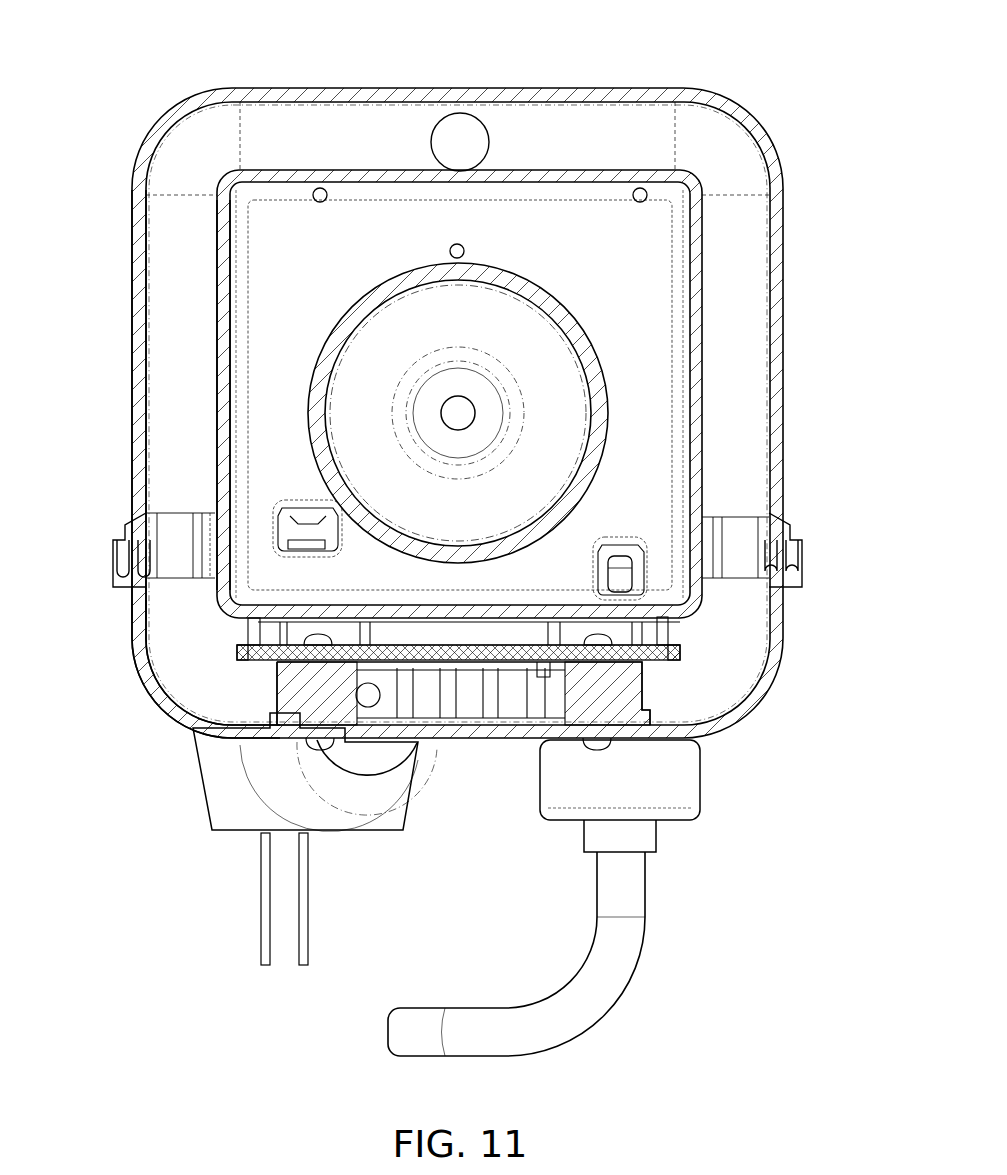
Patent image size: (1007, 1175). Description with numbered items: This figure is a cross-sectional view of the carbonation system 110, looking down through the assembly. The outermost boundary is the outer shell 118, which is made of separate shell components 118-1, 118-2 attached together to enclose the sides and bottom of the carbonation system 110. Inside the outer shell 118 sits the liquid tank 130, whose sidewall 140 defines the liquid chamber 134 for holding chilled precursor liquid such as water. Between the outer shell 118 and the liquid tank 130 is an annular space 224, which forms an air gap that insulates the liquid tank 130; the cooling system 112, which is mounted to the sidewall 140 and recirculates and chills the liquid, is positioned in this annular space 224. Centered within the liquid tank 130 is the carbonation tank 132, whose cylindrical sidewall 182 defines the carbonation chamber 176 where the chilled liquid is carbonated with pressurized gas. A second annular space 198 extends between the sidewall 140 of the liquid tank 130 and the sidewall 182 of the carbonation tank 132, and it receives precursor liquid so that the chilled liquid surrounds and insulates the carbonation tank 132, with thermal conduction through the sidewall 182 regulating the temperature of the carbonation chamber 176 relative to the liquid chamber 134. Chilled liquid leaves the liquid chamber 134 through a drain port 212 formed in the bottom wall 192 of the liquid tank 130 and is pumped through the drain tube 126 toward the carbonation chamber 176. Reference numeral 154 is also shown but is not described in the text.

The carbonation system 110 is at (120, 68).
The cooling system 112 is at (502, 725).
The outer shell 118 is at (790, 310).
The shell component 118-1 is at (140, 672).
The shell component 118-2 is at (133, 440).
The drain tube 126 is at (580, 1015).
The liquid tank 130 is at (708, 363).
The carbonation tank 132 is at (620, 410).
The liquid chamber 134 is at (283, 272).
The sidewall 140 is at (218, 408).
The mounting lug 154 is at (283, 537).
The carbonation chamber 176 is at (436, 331).
The sidewall 182 is at (325, 362).
The bottom wall 192 is at (630, 520).
The annular space 198 is at (643, 273).
The drain port 212 is at (637, 583).
The annular space 224 is at (303, 149).